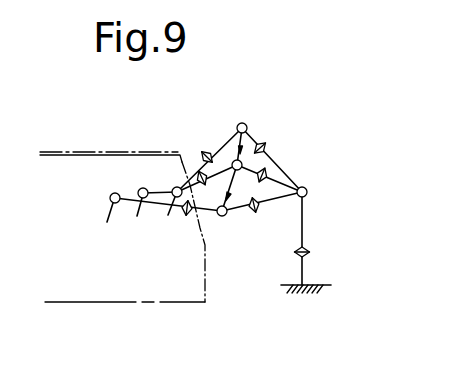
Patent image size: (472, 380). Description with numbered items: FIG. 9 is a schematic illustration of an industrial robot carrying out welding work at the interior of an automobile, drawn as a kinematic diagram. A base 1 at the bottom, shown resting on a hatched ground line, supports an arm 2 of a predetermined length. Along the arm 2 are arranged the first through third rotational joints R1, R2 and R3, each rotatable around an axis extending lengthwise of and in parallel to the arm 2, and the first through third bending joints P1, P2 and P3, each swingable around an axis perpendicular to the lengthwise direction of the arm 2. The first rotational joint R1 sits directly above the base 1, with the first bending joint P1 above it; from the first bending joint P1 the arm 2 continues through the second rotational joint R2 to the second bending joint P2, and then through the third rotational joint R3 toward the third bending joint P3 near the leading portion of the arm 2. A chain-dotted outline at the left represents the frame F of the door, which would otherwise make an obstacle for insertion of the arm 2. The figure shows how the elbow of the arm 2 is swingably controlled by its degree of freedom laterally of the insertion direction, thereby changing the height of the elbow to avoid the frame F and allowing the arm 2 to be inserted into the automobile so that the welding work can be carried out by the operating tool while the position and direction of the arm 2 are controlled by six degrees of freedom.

The base 1 is at (315, 283).
The arm 2 is at (300, 168).
The frame F is at (122, 189).
The first bending joint P1 is at (308, 192).
The second bending joint P2 is at (259, 108).
The third bending joint P3 is at (177, 186).
The first rotational joint R1 is at (309, 245).
The second rotational joint R2 is at (285, 133).
The third rotational joint R3 is at (209, 129).